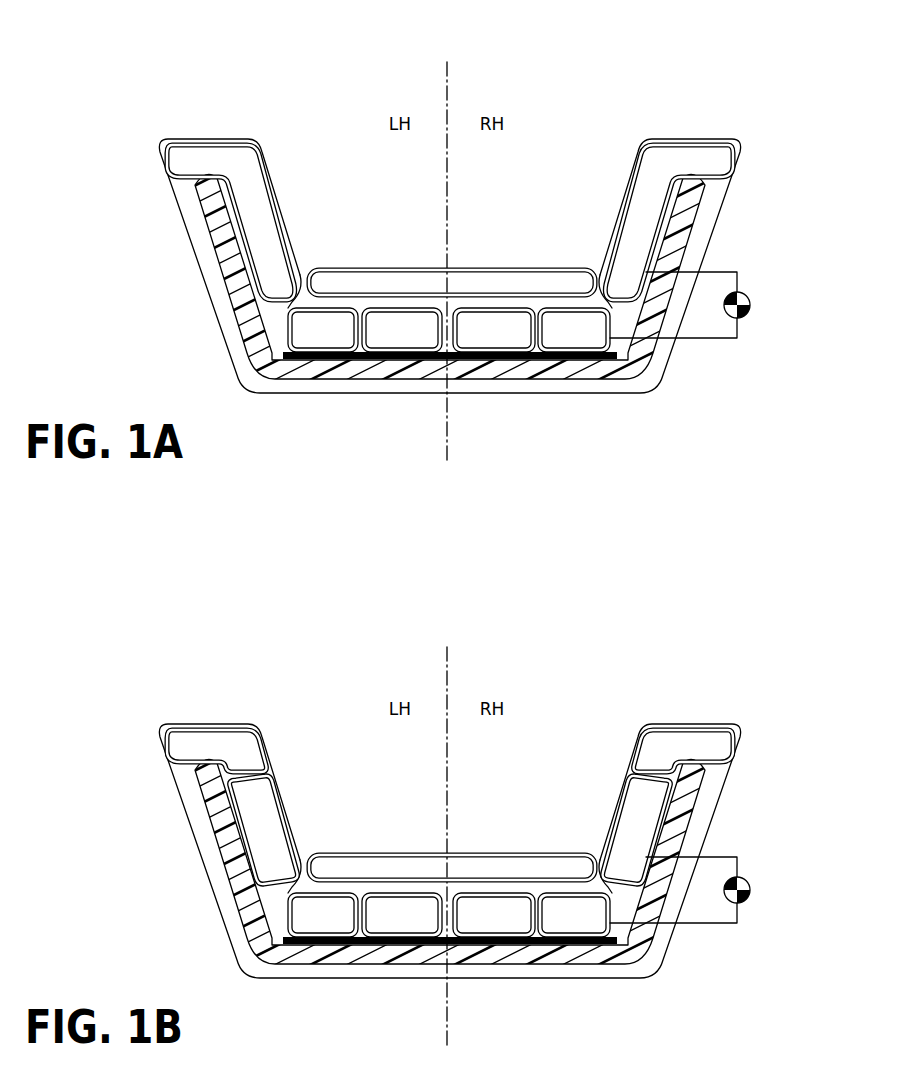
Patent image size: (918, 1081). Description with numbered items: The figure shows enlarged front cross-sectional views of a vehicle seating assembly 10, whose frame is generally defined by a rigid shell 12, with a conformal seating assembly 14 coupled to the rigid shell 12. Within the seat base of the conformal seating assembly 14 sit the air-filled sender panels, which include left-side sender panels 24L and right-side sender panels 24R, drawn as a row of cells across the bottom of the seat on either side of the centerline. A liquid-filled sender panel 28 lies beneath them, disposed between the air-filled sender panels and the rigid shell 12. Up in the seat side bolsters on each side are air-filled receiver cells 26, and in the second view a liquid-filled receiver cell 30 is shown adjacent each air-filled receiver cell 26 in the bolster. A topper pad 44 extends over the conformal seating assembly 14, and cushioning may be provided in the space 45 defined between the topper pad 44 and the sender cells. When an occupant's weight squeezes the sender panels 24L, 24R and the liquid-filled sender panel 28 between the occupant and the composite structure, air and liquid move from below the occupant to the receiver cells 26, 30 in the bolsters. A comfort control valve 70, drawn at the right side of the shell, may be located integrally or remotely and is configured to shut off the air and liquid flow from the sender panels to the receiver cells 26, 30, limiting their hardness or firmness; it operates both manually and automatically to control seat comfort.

In FIG. 1A, the vehicle seating assembly 10 is at (613, 116).
In FIG. 1B, the vehicle seating assembly 10 is at (459, 839).
In FIG. 1A, the rigid shell 12 is at (690, 233).
In FIG. 1B, the rigid shell 12 is at (459, 854).
In FIG. 1A, the conformal seating assembly 14 is at (303, 263).
In FIG. 1B, the conformal seating assembly 14 is at (450, 821).
In FIG. 1A, the left-side sender panels 24L is at (327, 328).
In FIG. 1B, the left-side sender panels 24L is at (365, 874).
In FIG. 1A, the right-side sender panels 24R is at (557, 330).
In FIG. 1B, the right-side sender panels 24R is at (531, 865).
In FIG. 1A, the air-filled receiver cells 26 is at (247, 164).
In FIG. 1B, the air-filled receiver cells 26 is at (468, 716).
In FIG. 1A, the liquid-filled sender panel 28 is at (350, 362).
In FIG. 1B, the liquid-filled sender panel 28 is at (450, 989).
In FIG. 1B, the liquid-filled receiver cell 30 is at (450, 778).
In FIG. 1A, the topper pad 44 is at (360, 268).
In FIG. 1B, the topper pad 44 is at (452, 829).
In FIG. 1A, the space 45 is at (533, 303).
In FIG. 1B, the space 45 is at (449, 854).
In FIG. 1A, the comfort control valve 70 is at (752, 315).
In FIG. 1B, the comfort control valve 70 is at (704, 914).